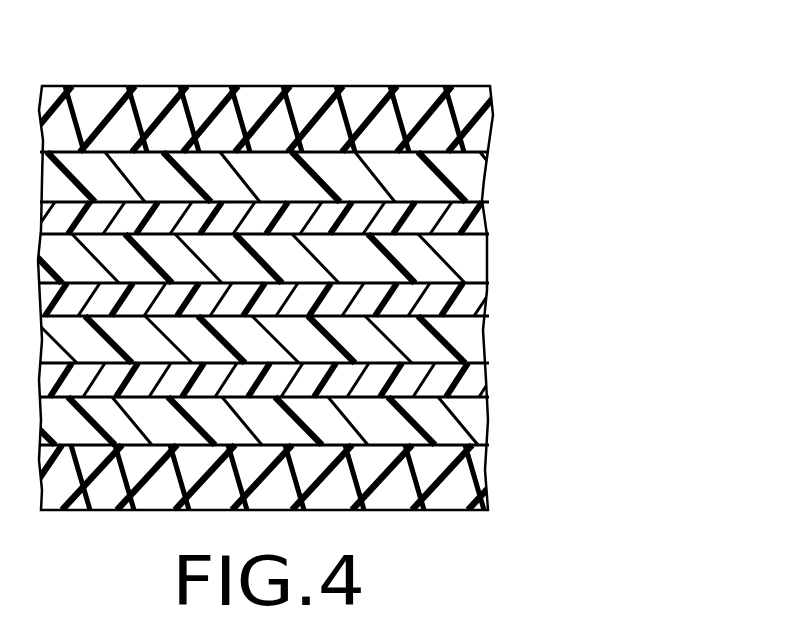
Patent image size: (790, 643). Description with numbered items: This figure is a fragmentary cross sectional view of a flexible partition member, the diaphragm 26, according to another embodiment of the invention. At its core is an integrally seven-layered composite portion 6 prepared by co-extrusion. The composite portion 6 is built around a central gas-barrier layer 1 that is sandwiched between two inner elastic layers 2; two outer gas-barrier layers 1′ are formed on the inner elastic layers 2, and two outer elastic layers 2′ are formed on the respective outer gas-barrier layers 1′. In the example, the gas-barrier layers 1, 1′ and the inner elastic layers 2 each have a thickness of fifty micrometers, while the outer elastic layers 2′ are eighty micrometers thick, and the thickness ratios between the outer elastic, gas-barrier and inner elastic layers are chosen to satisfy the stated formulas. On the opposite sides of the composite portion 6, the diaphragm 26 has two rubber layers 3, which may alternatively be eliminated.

The diaphragm 26 is at (605, 93).
The seven-layered composite portion 6 is at (578, 157).
The rubber layer 3 is at (476, 116).
The outer elastic layer 2′ is at (468, 175).
The outer gas-barrier layer 1′ is at (476, 213).
The inner elastic layer 2 is at (472, 260).
The gas-barrier layer 1 is at (474, 298).